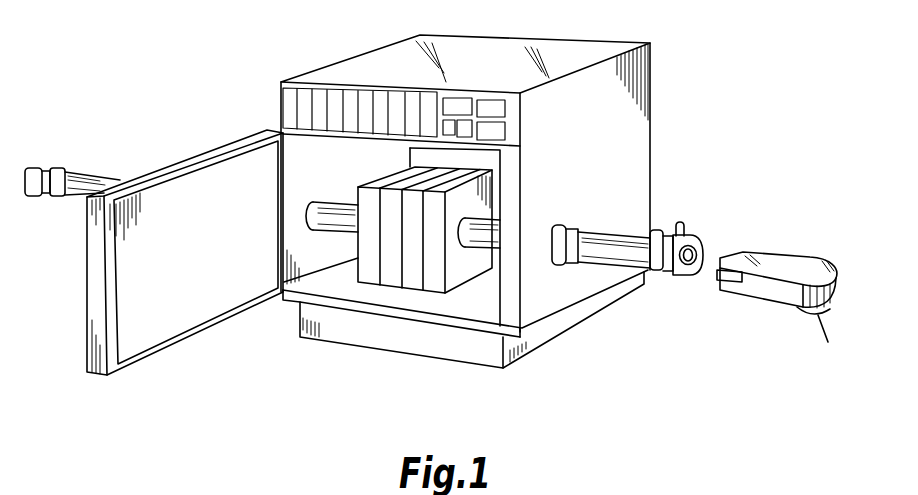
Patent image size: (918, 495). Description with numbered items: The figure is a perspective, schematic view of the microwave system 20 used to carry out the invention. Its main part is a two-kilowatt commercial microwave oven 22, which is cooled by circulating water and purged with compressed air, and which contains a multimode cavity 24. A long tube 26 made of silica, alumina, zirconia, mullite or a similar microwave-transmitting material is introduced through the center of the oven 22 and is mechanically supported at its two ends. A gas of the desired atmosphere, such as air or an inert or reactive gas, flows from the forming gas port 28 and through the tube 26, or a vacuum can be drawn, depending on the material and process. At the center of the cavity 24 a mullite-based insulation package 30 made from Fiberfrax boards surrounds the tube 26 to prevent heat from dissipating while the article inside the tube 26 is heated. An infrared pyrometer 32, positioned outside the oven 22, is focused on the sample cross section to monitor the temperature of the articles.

The microwave system 20 is at (599, 25).
The microwave oven 22 is at (632, 141).
The multimode cavity 24 is at (318, 164).
The tube 26 is at (87, 173).
The forming gas port 28 is at (682, 232).
The insulation package 30 is at (392, 268).
The infrared pyrometer 32 is at (783, 265).